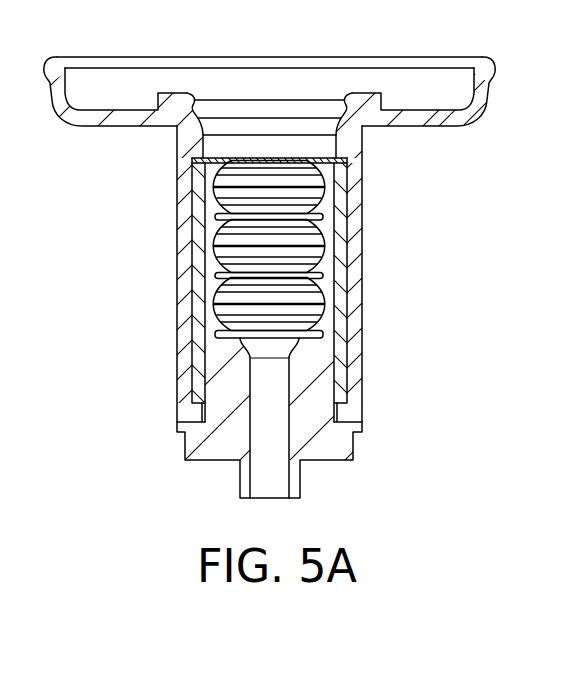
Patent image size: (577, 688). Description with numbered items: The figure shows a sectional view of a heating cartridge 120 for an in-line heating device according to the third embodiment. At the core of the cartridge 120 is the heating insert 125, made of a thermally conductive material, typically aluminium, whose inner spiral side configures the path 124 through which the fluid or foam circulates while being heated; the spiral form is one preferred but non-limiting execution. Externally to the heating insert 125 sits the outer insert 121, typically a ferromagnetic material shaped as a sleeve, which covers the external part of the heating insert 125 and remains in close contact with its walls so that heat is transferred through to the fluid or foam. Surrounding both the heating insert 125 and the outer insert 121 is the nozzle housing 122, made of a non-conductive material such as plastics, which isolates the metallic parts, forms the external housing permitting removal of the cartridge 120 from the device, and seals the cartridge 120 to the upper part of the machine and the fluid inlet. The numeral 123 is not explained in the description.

The heating cartridge 120 is at (146, 290).
The outer insert 121 is at (350, 285).
The nozzle housing 122 is at (471, 113).
The pin 123 is at (257, 472).
The path 124 is at (318, 243).
The heating insert 125 is at (318, 393).